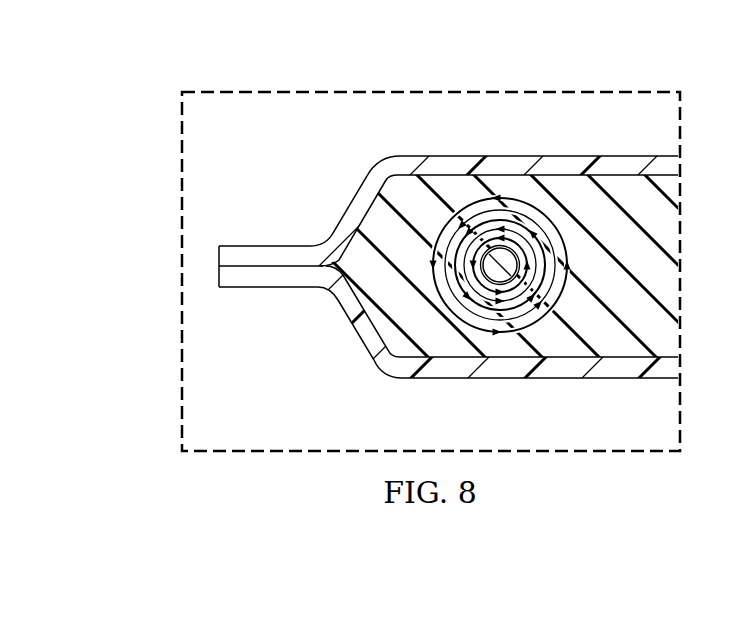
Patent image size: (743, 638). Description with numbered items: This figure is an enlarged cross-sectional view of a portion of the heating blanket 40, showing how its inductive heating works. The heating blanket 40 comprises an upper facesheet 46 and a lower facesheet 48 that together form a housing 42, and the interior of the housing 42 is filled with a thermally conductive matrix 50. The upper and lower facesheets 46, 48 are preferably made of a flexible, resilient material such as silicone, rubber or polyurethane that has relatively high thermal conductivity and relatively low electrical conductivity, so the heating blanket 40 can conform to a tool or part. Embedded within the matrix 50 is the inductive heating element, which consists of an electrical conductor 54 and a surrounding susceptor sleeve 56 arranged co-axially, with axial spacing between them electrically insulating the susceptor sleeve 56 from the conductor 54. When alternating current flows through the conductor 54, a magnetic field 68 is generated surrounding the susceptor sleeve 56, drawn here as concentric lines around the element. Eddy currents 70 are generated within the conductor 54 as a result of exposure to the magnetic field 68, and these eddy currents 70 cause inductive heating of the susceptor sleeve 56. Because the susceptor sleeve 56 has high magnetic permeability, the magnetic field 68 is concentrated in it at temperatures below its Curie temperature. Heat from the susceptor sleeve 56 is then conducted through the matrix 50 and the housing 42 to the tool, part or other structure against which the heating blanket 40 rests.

The heating blanket 40 is at (291, 213).
The housing 42 is at (512, 386).
The upper facesheet 46 is at (644, 163).
The lower facesheet 48 is at (629, 368).
The thermally conductive matrix 50 is at (402, 184).
The electrical conductor 54 is at (466, 302).
The susceptor sleeve 56 is at (534, 252).
The magnetic field 68 is at (503, 195).
The eddy currents 70 is at (491, 282).